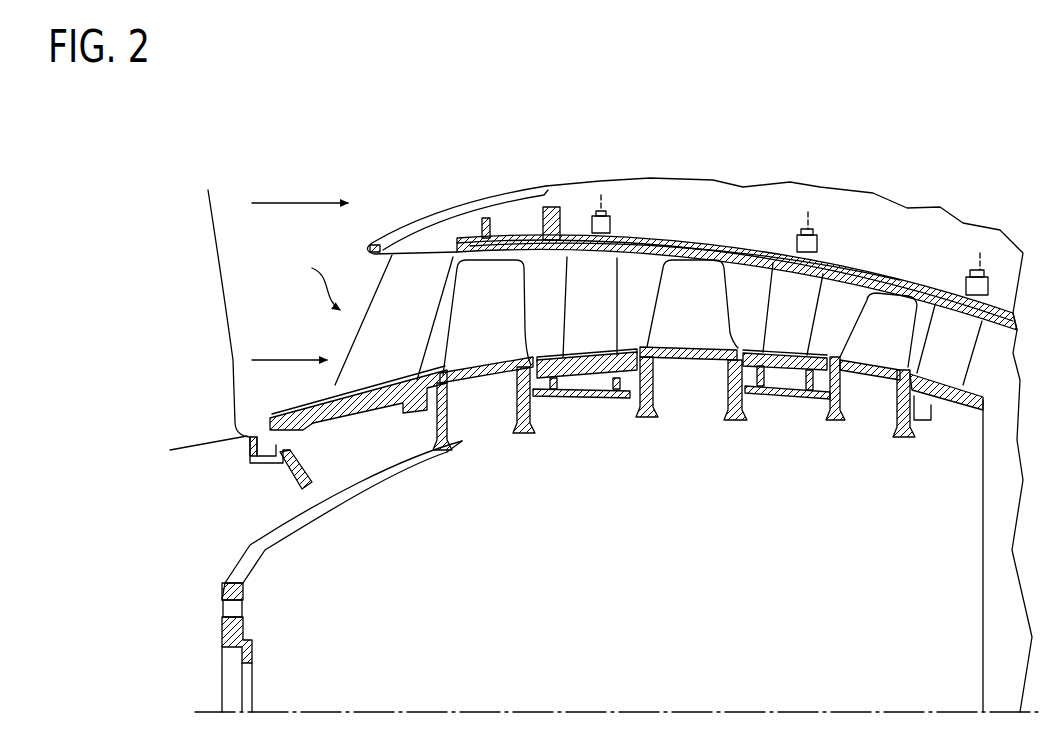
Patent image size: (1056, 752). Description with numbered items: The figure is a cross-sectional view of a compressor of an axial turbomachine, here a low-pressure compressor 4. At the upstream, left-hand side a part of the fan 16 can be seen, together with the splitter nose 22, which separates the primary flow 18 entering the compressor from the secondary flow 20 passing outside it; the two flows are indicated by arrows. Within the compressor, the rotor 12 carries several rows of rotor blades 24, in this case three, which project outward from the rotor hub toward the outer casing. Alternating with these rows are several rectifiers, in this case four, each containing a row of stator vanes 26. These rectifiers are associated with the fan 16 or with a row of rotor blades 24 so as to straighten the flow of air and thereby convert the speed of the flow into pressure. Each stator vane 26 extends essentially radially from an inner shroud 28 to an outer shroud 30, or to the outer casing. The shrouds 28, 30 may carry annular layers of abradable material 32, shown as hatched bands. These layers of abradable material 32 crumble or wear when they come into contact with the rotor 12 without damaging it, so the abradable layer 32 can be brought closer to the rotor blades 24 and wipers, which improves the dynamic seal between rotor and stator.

The low-pressure compressor 4 is at (903, 150).
The rotor 12 is at (245, 582).
The fan 16 is at (212, 341).
The primary flow 18 is at (296, 314).
The secondary flow 20 is at (300, 185).
The splitter nose 22 is at (400, 203).
The rotor blades 24 is at (502, 321).
The stator vanes 26 is at (405, 331).
The inner shroud 28 is at (288, 417).
The outer shroud 30 is at (463, 243).
The layer of abradable material 32 is at (510, 243).